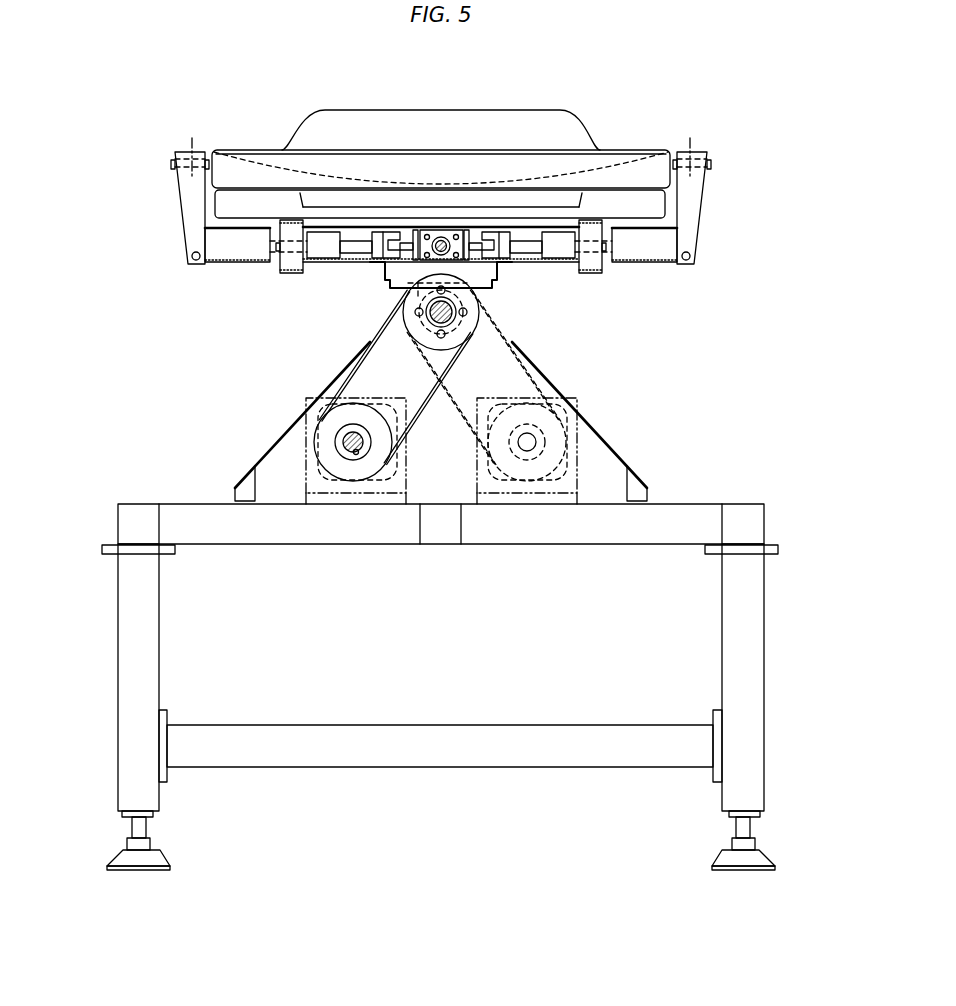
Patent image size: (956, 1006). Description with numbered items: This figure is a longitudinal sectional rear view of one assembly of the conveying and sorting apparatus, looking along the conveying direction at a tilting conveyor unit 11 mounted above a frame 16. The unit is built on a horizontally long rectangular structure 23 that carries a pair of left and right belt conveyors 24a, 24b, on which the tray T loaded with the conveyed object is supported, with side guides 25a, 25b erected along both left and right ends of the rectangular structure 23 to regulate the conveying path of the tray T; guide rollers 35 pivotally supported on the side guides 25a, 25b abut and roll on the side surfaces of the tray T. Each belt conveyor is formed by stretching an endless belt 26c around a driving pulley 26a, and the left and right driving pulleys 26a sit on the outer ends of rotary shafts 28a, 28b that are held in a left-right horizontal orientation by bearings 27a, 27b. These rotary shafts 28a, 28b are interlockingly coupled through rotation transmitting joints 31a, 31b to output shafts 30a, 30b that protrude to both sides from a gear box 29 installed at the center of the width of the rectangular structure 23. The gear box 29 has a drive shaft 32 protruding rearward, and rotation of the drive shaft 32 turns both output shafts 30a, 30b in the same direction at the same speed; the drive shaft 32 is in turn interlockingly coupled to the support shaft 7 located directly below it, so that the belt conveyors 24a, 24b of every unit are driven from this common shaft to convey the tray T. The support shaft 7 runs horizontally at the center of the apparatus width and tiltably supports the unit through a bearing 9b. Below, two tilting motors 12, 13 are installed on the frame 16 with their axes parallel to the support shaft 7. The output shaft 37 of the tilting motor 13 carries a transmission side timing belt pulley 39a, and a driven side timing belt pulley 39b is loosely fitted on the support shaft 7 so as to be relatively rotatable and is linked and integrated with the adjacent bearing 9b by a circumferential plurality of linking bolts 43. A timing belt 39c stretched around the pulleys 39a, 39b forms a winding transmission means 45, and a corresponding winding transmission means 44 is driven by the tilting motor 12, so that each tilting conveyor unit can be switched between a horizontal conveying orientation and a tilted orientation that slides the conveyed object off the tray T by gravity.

The tilting conveyor unit 11 is at (167, 192).
The tray T is at (662, 198).
The rectangular structure 23 is at (333, 220).
The belt conveyor 24a is at (288, 219).
The belt conveyor 24b is at (593, 216).
The side guide 25a is at (190, 212).
The side guide 25b is at (695, 210).
The driving pulley 26a is at (288, 240).
The endless belt 26c is at (279, 247).
The bearing 27a is at (322, 255).
The bearing 27b is at (558, 255).
The rotary shaft 28a is at (347, 264).
The rotary shaft 28b is at (530, 243).
The gear box 29 is at (434, 238).
The output shaft 30a is at (405, 243).
The output shaft 30b is at (476, 243).
The rotation transmitting joint 31a is at (378, 236).
The rotation transmitting joint 31b is at (505, 236).
The drive shaft 32 is at (444, 240).
The guide roller 35 is at (192, 138).
The support shaft 7 is at (412, 306).
The linking bolt 43 is at (445, 292).
The transmission side timing belt pulley 39a is at (333, 420).
The driven side timing belt pulley 39b is at (478, 325).
The timing belt 39c is at (428, 402).
The bearing 9b is at (486, 385).
The output shaft 37 is at (352, 444).
The winding transmission means 45 is at (351, 377).
The winding transmission means 44 is at (531, 368).
The tilting motor 13 is at (342, 493).
The tilting motor 12 is at (557, 495).
The frame 16 is at (401, 532).